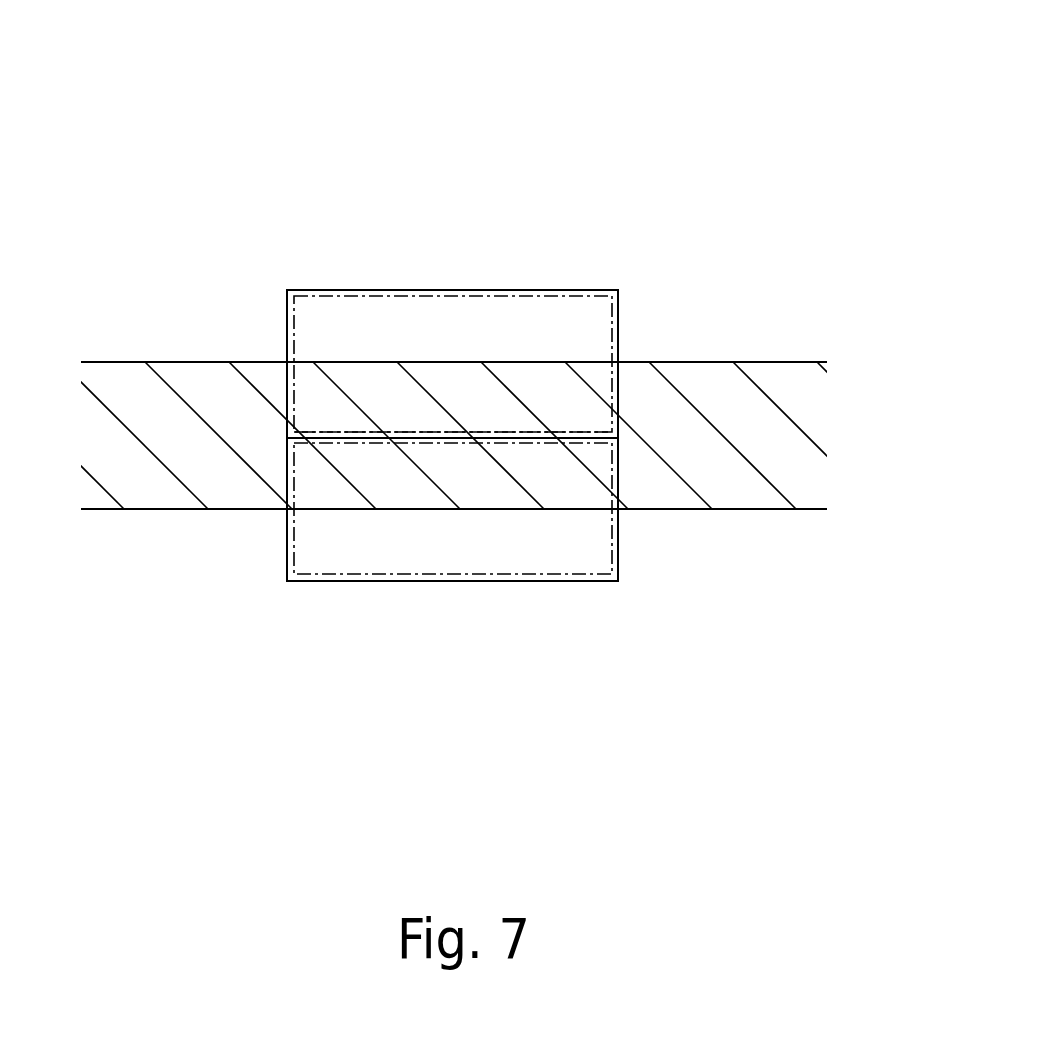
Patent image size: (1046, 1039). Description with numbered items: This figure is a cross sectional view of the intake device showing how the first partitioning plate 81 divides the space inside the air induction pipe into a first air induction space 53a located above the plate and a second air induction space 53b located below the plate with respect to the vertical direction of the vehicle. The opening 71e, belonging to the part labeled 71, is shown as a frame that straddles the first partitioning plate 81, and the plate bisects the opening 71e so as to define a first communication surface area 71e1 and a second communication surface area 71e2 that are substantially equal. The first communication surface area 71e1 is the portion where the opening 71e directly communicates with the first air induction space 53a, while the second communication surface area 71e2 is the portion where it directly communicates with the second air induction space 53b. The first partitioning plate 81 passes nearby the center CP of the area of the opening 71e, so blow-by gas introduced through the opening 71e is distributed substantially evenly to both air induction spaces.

The first air induction space 53a is at (512, 80).
The second air induction space 53b is at (513, 759).
The contact member 71 is at (253, 338).
The opening 71e is at (548, 351).
The first communication surface area 71e1 is at (580, 331).
The second communication surface area 71e2 is at (582, 531).
The first partitioning plate 81 is at (175, 483).
The center CP is at (453, 435).